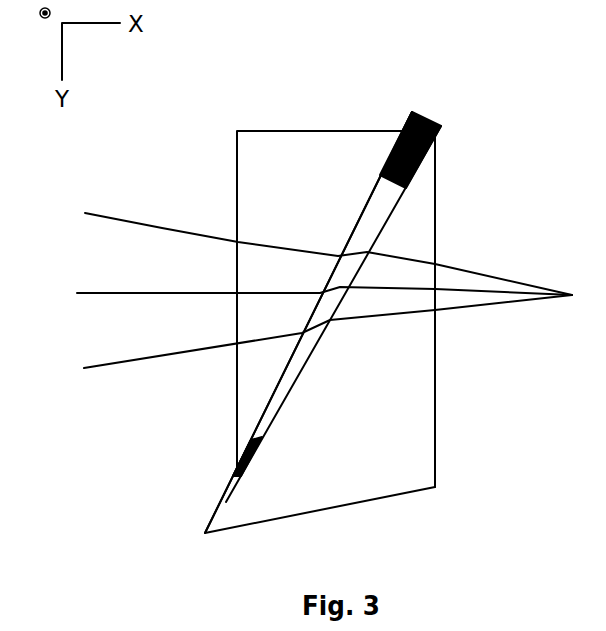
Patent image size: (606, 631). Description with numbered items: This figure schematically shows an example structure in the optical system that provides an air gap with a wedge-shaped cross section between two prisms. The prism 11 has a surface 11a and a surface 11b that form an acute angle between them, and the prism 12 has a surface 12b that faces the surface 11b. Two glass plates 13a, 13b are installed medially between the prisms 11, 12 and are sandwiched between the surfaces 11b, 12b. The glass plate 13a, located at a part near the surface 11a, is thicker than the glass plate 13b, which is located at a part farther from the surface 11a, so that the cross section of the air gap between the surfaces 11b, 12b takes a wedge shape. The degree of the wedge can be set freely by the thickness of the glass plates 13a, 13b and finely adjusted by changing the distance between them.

The prism 11 is at (361, 483).
The surface 11a is at (437, 237).
The surface 11b is at (400, 193).
The prism 12 is at (278, 147).
The surface 12b is at (374, 190).
The glass plate 13a is at (407, 114).
The glass plate 13b is at (233, 472).